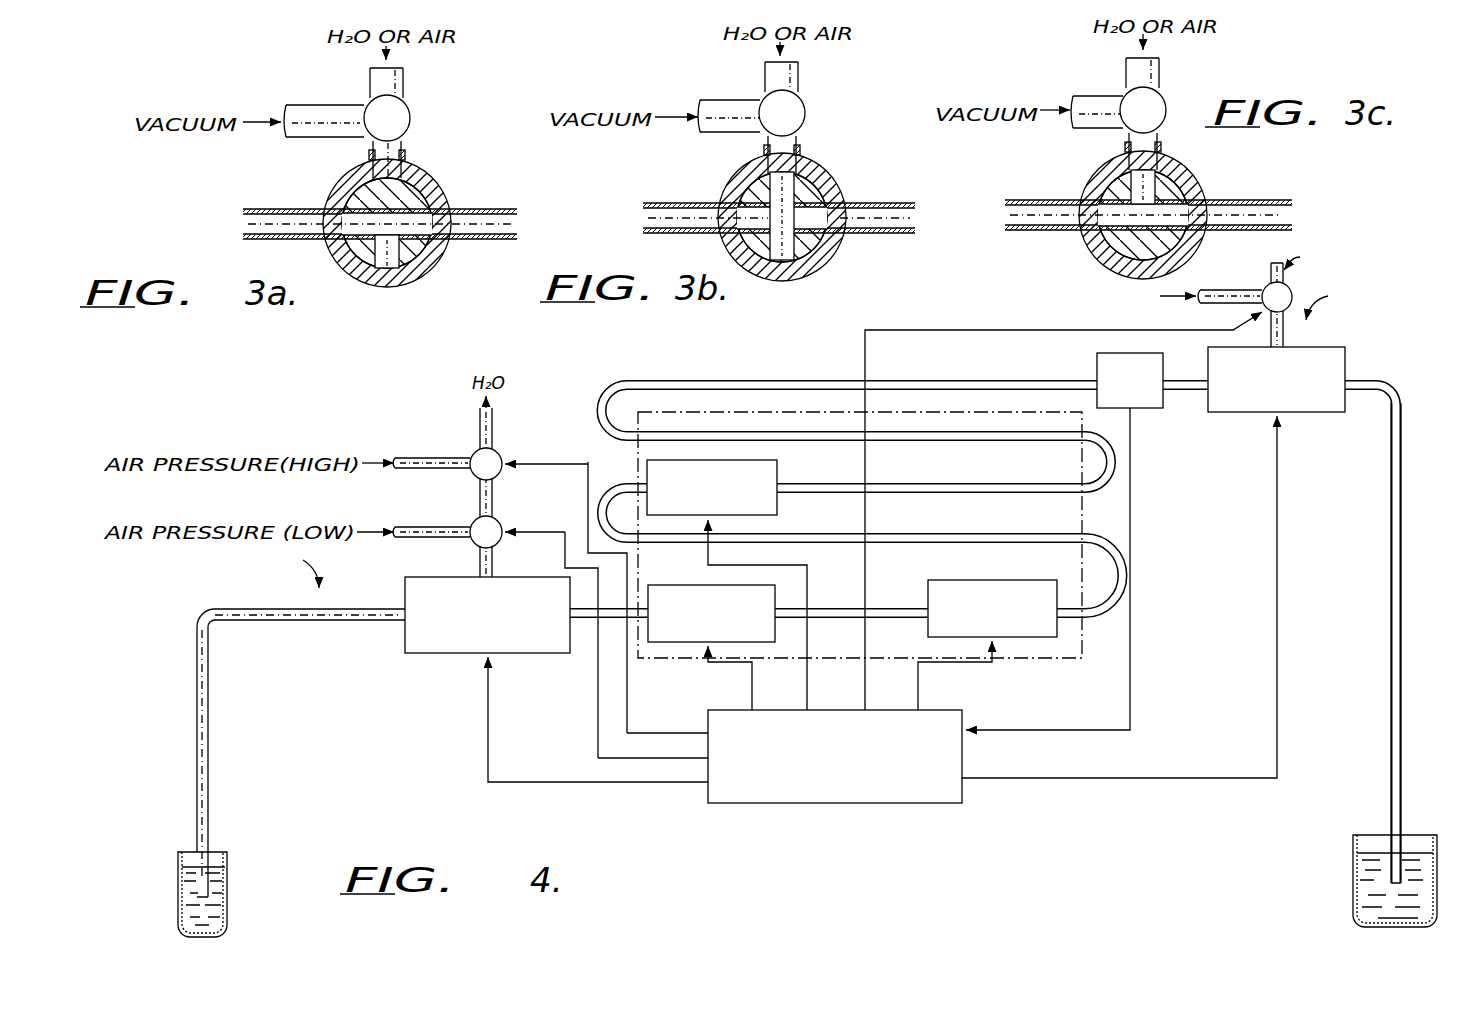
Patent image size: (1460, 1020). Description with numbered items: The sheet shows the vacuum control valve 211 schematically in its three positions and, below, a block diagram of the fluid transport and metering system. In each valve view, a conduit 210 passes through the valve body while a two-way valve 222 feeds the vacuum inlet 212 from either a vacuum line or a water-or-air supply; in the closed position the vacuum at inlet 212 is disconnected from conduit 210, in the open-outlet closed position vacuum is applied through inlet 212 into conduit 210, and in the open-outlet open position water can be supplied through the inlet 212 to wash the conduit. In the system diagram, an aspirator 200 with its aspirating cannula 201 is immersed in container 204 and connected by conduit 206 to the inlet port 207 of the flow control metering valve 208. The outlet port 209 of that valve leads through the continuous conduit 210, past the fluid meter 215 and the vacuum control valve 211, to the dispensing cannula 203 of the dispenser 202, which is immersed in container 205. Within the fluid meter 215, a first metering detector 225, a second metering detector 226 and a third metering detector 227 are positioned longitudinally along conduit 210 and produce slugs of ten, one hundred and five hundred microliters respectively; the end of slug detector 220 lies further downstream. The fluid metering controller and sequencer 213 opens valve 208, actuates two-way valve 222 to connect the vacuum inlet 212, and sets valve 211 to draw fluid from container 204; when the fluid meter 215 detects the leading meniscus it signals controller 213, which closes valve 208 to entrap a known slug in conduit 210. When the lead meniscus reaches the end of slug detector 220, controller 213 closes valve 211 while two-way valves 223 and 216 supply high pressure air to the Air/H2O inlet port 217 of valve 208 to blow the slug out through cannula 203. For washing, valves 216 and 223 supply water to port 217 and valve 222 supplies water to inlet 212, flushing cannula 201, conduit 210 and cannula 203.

In FIG. 4, the aspirator 200 is at (253, 608).
In FIG. 4, the aspirating cannula 201 is at (205, 767).
In FIG. 4, the dispenser 202 is at (1259, 297).
In FIG. 4, the dispensing cannula 203 is at (1392, 705).
In FIG. 4, the container 204 is at (227, 887).
In FIG. 4, the container 205 is at (1354, 880).
In FIG. 4, the conduit 206 is at (212, 632).
In FIG. 4, the inlet port 207 is at (389, 609).
In FIG. 4, the flow control metering valve 208 is at (460, 654).
In FIG. 4, the outlet port 209 is at (583, 620).
In FIG. 3A, the conduit 210 is at (301, 209).
In FIG. 3B, the conduit 210 is at (695, 203).
In FIG. 3C, the conduit 210 is at (1050, 198).
In FIG. 4, the conduit 210 is at (1113, 489).
In FIG. 3A, the vacuum control valve 211 is at (442, 178).
In FIG. 3B, the vacuum control valve 211 is at (746, 168).
In FIG. 3C, the vacuum control valve 211 is at (1107, 174).
In FIG. 4, the vacuum control valve 211 is at (1304, 412).
In FIG. 3A, the vacuum inlet 212 is at (373, 148).
In FIG. 3B, the vacuum inlet 212 is at (797, 143).
In FIG. 3C, the vacuum inlet 212 is at (1158, 140).
In FIG. 4, the vacuum inlet 212 is at (1280, 331).
In FIG. 4, the fluid metering controller and sequencer 213 is at (960, 712).
In FIG. 4, the fluid meter 215 is at (1093, 630).
In FIG. 4, the two-way valve 216 is at (500, 524).
In FIG. 4, the Air/H2O inlet port 217 is at (480, 563).
In FIG. 4, the end of slug detector 220 is at (1148, 405).
In FIG. 3A, the two-way valve 222 is at (410, 116).
In FIG. 3B, the two-way valve 222 is at (805, 112).
In FIG. 3C, the two-way valve 222 is at (1162, 100).
In FIG. 4, the two-way valve 222 is at (1264, 286).
In FIG. 4, the two-way valve 223 is at (500, 456).
In FIG. 4, the first metering detector 225 is at (770, 596).
In FIG. 4, the second metering detector 226 is at (986, 582).
In FIG. 4, the third metering detector 227 is at (777, 468).